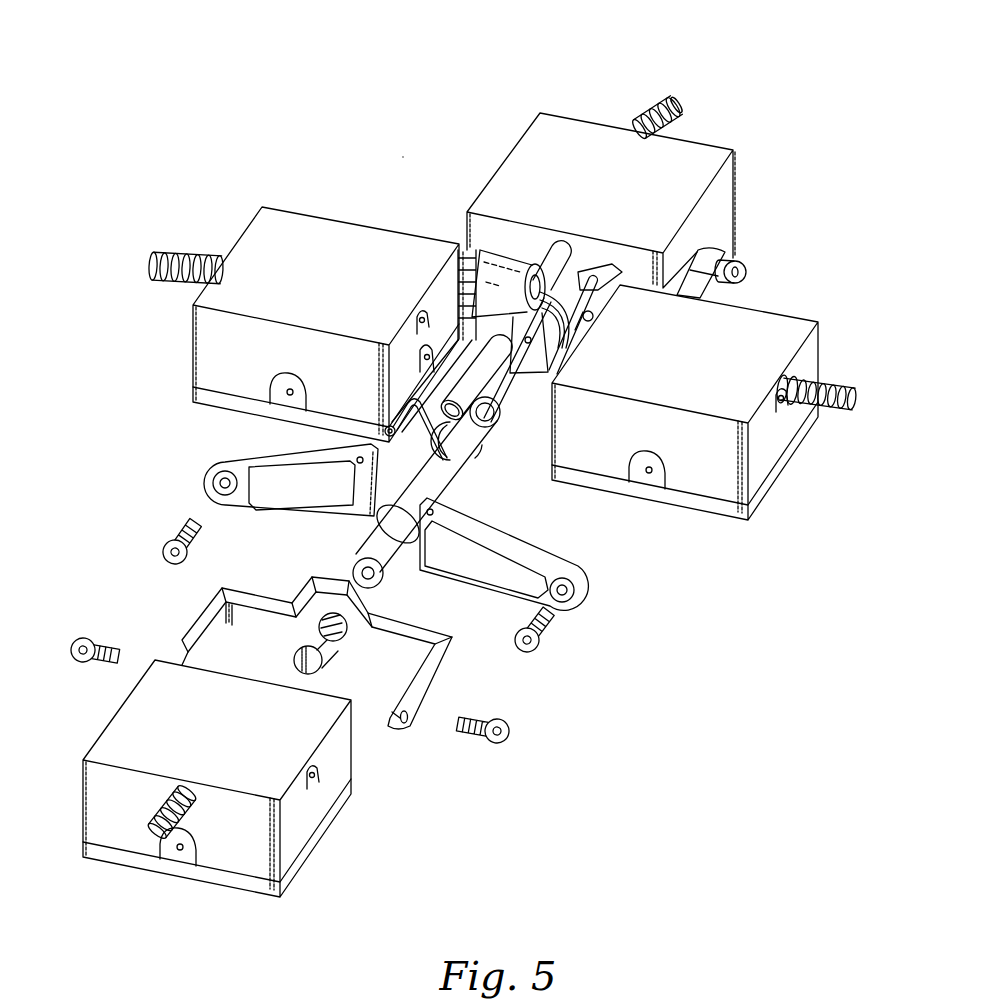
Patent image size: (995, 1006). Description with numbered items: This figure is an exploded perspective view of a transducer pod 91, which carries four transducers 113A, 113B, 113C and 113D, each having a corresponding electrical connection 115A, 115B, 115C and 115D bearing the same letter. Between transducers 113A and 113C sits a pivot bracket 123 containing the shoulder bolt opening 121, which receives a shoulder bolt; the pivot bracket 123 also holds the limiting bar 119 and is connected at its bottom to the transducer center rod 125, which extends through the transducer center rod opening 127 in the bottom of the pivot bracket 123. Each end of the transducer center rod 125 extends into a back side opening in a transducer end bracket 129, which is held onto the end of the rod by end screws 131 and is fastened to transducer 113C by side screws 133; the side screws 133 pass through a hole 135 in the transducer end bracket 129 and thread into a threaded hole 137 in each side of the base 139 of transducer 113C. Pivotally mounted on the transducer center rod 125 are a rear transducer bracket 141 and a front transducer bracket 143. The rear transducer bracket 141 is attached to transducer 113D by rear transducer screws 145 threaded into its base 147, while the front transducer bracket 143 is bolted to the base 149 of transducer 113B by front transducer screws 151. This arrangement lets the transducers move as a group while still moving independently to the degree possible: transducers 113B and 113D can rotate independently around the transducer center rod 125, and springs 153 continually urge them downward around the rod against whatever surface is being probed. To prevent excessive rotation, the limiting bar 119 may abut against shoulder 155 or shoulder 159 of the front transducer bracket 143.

The transducer pod 91 is at (402, 152).
The transducer 113A is at (572, 188).
The transducer 113B is at (685, 416).
The transducer 113C is at (219, 796).
The transducer 113D is at (287, 324).
The electrical connection 115A is at (652, 122).
The electrical connection 115B is at (832, 418).
The electrical connection 115C is at (140, 822).
The electrical connection 115D is at (170, 282).
The limiting bar 119 is at (468, 372).
The shoulder bolt opening 121 is at (556, 250).
The pivot bracket 123 is at (520, 311).
The transducer center rod 125 is at (455, 470).
The transducer center rod opening 127 is at (492, 404).
The transducer end bracket 129 is at (433, 683).
The end screw 131 is at (330, 662).
The side screw 133 is at (742, 266).
The hole 135 is at (412, 726).
The threaded hole 137 is at (322, 822).
The base 139 is at (243, 893).
The rear transducer bracket 141 is at (224, 458).
The front transducer bracket 143 is at (556, 548).
The rear transducer screw 145 is at (178, 537).
The base 147 is at (192, 399).
The base 149 is at (680, 505).
The front transducer screw 151 is at (545, 635).
The spring 153 is at (388, 426).
The shoulder 155 is at (362, 494).
The shoulder 159 is at (432, 538).